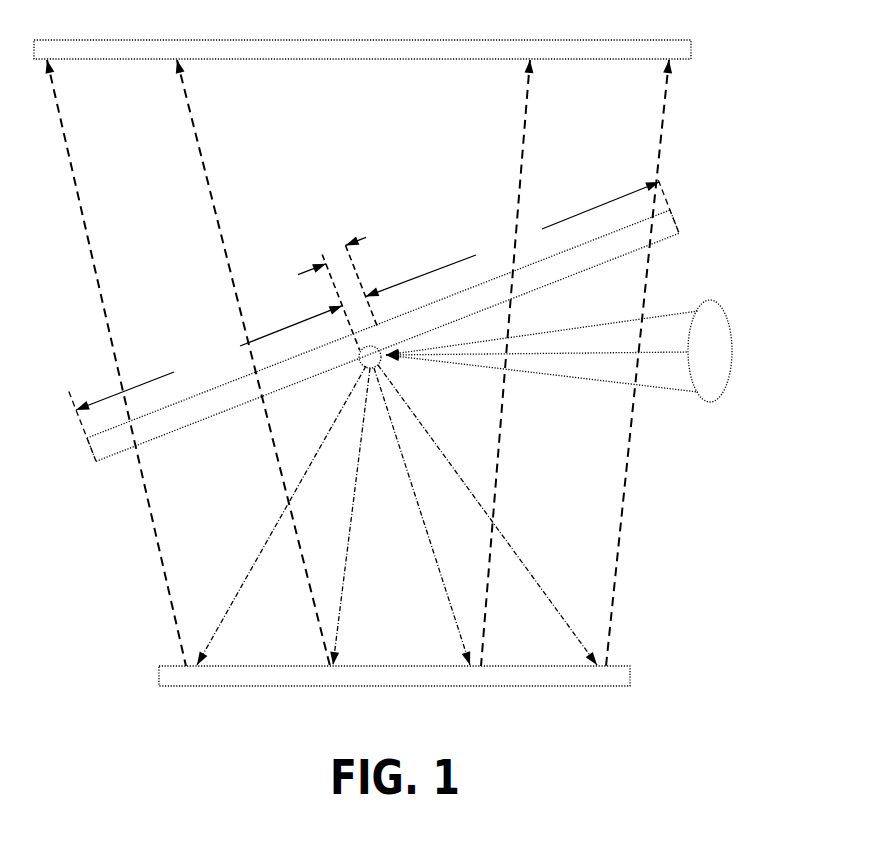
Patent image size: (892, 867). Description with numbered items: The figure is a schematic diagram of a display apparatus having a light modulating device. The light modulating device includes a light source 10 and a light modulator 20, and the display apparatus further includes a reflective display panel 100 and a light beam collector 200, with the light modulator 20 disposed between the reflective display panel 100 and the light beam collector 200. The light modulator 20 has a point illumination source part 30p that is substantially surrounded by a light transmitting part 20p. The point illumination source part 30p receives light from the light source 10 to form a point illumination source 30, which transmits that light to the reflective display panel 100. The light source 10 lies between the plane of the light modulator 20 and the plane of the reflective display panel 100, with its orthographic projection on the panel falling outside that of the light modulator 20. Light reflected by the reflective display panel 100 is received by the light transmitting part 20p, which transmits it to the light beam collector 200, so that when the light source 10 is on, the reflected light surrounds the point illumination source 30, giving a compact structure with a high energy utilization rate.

The light beam collector 200 is at (650, 49).
The reflective display panel 100 is at (602, 676).
The light source 10 is at (710, 352).
The light modulator 20 is at (102, 447).
The point illumination source 30 is at (374, 352).
The light transmitting part 20p is at (374, 320).
The point illumination source part 30p is at (333, 267).